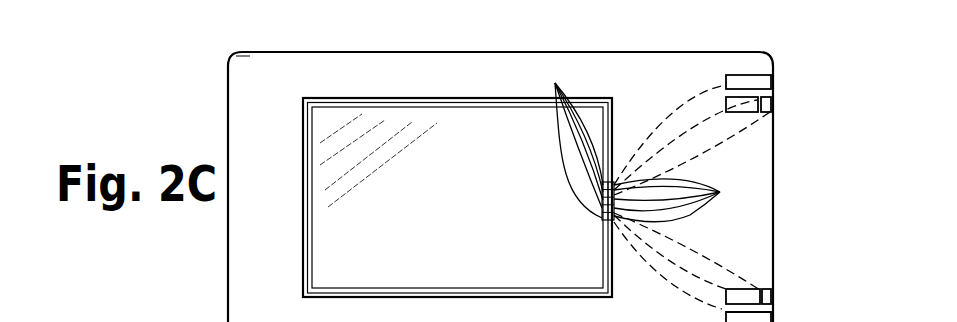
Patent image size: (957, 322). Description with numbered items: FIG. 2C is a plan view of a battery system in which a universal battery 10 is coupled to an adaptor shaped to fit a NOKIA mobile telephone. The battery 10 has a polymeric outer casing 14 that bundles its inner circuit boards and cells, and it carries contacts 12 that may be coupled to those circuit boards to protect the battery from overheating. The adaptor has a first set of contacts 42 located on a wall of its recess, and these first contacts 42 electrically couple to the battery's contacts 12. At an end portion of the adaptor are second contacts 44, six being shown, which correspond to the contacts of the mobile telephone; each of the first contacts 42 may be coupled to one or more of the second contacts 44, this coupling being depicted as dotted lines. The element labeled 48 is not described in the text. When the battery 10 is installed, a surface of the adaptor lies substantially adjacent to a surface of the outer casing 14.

The universal battery 10 is at (478, 163).
The contacts 12 is at (555, 83).
The outer casing 14 is at (488, 208).
The first set of contacts 42 is at (720, 192).
The second contacts 44 is at (772, 80).
The housing 48 is at (268, 131).